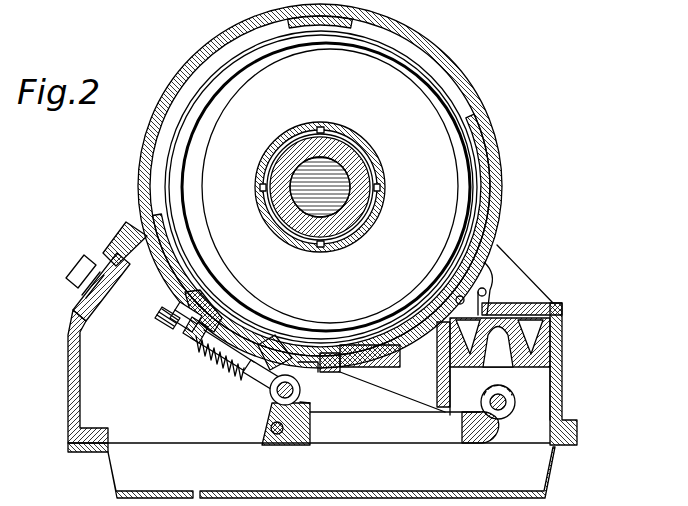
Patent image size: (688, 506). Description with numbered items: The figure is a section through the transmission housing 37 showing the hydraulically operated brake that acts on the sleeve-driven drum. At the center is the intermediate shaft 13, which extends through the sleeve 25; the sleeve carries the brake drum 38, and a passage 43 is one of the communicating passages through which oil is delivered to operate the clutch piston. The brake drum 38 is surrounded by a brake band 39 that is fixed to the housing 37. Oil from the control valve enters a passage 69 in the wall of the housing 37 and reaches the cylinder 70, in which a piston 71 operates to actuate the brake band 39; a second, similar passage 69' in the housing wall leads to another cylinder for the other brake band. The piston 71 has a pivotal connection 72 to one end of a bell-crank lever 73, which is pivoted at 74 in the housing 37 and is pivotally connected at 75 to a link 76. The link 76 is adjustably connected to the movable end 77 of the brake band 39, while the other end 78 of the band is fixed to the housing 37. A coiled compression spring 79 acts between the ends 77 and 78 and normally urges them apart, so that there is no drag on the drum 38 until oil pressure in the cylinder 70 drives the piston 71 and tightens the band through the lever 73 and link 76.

The intermediate shaft 13 is at (363, 170).
The sleeve 25 is at (372, 217).
The passage 43 is at (337, 260).
The housing 37 is at (503, 159).
The brake drum 38 is at (470, 212).
The passage 69 is at (521, 282).
The passage 69' is at (434, 276).
The cylinder 70 is at (561, 348).
The piston 71 is at (439, 366).
The pivotal connection 72 is at (500, 411).
The bell-crank lever 73 is at (400, 440).
The pivot 74 is at (272, 446).
The pivotal connection 75 is at (277, 396).
The link 76 is at (154, 329).
The movable end of the brake band 77 is at (190, 352).
The fixed end of the brake band 78 is at (266, 348).
The coiled compression spring 79 is at (236, 381).
The brake band 39 is at (340, 360).